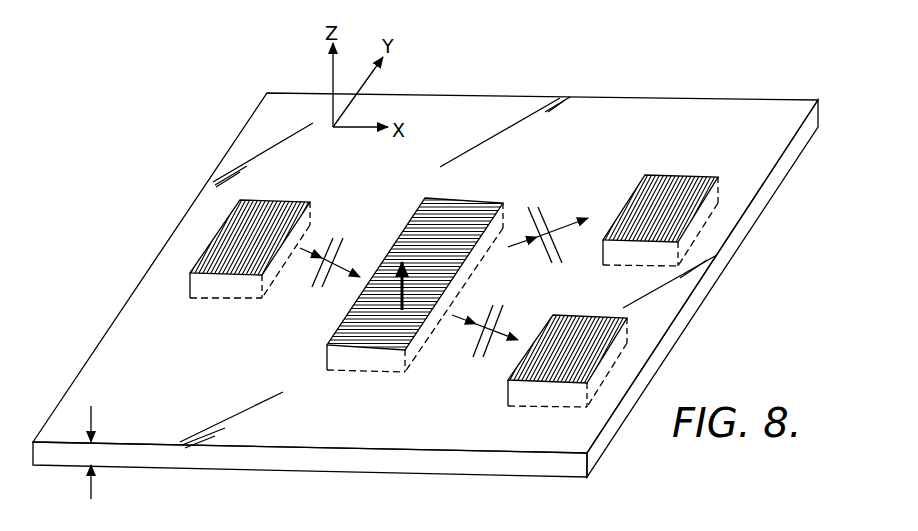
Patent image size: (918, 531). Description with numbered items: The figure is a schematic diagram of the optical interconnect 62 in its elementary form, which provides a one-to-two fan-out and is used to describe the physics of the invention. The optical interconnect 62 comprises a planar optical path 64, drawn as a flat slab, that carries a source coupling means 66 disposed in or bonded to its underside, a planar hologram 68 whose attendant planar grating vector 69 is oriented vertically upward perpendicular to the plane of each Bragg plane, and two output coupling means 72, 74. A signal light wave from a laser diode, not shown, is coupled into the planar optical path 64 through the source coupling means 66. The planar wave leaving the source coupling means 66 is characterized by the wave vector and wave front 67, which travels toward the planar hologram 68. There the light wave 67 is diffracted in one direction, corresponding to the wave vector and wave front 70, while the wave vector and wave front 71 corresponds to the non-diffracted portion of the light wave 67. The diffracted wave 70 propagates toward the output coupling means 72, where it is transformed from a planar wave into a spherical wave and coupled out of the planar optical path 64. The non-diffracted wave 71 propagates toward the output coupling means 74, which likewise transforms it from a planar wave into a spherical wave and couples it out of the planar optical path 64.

The optical interconnect 62 is at (778, 58).
The planar optical path 64 is at (750, 115).
The source coupling means 66 is at (253, 220).
The wave vector and wave front 67 is at (343, 252).
The planar hologram 68 is at (470, 217).
The planar grating vector 69 is at (398, 296).
The wave vector and wave front 70 is at (557, 222).
The wave vector and wave front 71 is at (477, 342).
The output coupling means 72 is at (687, 202).
The output coupling means 74 is at (600, 338).